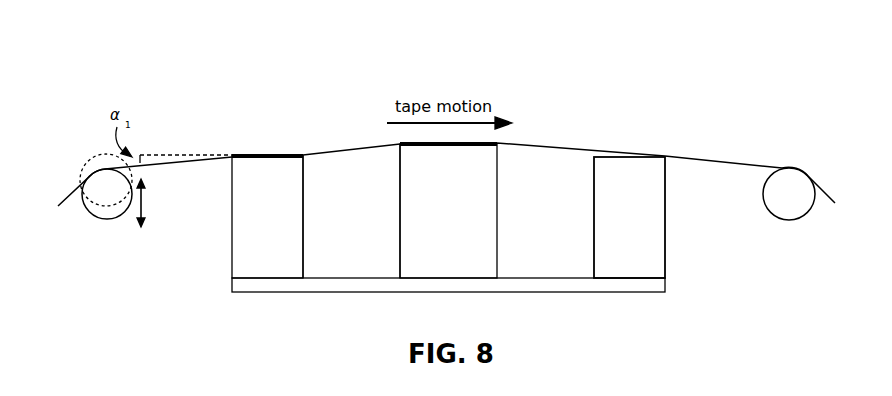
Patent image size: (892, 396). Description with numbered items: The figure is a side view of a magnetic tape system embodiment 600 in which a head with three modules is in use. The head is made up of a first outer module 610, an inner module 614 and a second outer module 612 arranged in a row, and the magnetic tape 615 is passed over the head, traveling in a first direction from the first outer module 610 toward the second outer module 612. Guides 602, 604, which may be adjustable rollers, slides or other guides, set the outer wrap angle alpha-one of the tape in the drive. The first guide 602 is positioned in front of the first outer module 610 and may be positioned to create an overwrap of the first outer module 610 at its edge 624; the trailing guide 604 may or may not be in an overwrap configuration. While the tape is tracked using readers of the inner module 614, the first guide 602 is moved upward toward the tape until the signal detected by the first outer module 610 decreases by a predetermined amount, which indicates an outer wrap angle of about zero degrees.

The embodiment 600 is at (148, 97).
The first guide 602 is at (113, 222).
The trailing guide 604 is at (788, 221).
The first outer module 610 is at (232, 250).
The second outer module 612 is at (594, 247).
The inner module 614 is at (400, 247).
The magnetic tape 615 is at (785, 170).
The edge 624 is at (218, 137).